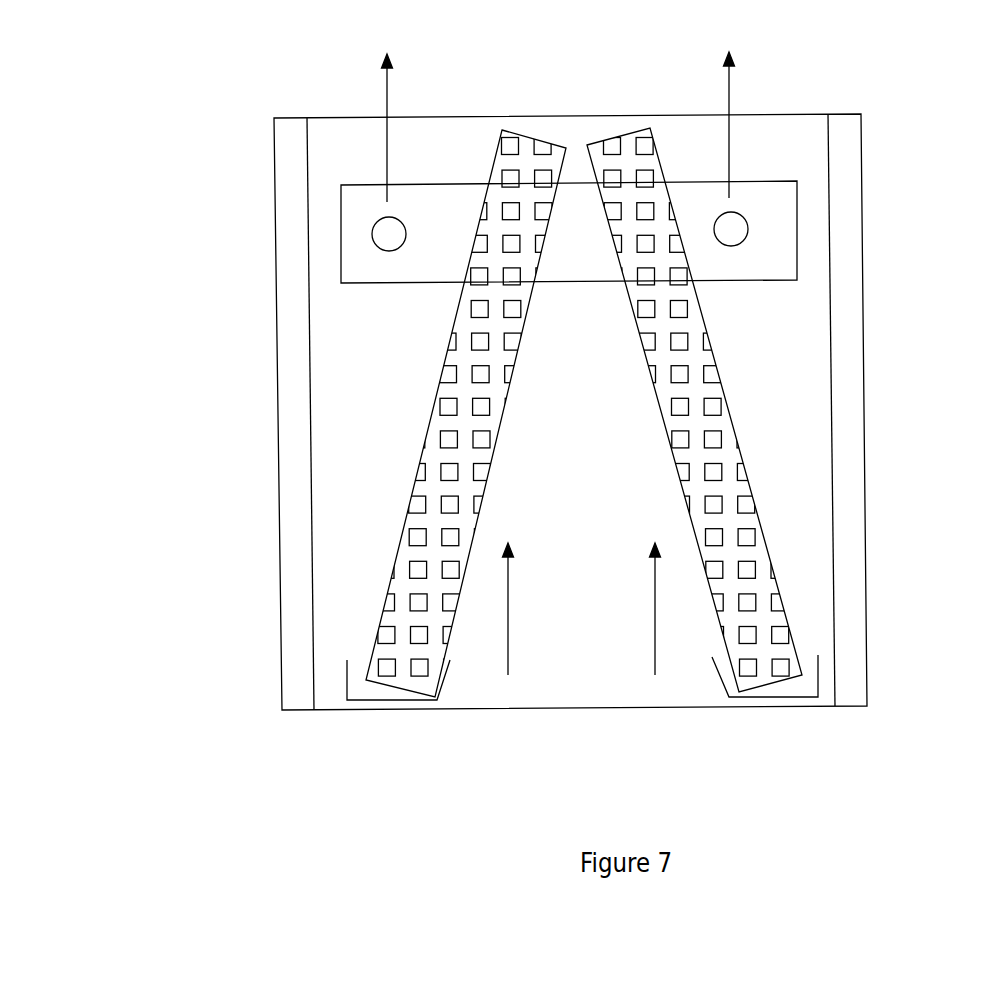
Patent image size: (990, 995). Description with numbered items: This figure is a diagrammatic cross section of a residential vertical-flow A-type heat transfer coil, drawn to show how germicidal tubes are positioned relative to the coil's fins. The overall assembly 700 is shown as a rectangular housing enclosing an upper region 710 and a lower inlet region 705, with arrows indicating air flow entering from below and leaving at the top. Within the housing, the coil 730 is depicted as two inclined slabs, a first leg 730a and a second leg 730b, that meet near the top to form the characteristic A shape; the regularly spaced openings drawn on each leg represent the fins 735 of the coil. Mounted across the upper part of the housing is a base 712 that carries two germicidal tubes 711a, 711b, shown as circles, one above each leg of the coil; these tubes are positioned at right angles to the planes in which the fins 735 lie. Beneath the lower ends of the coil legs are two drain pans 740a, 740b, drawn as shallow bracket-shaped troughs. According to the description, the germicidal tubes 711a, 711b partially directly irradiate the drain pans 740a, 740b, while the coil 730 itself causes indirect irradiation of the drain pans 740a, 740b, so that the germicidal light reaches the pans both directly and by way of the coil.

The housing 700 is at (277, 415).
The inlet region 705 is at (607, 678).
The upper chamber 710 is at (348, 141).
The germicidal tube 711a is at (370, 232).
The germicidal tube 711b is at (764, 233).
The base 712 is at (762, 181).
The coil 730 is at (562, 399).
The first filter panel 730a is at (385, 460).
The second filter panel 730b is at (736, 442).
The fins 735 is at (382, 507).
The drain pan 740a is at (347, 678).
The drain pan 740b is at (822, 688).